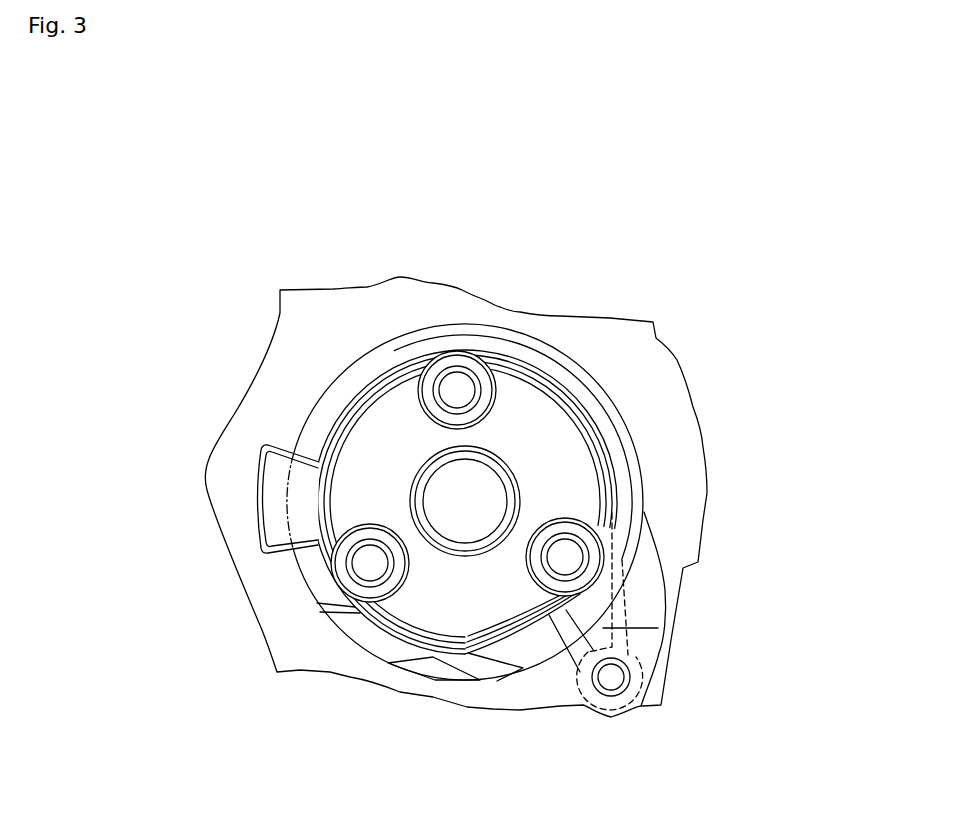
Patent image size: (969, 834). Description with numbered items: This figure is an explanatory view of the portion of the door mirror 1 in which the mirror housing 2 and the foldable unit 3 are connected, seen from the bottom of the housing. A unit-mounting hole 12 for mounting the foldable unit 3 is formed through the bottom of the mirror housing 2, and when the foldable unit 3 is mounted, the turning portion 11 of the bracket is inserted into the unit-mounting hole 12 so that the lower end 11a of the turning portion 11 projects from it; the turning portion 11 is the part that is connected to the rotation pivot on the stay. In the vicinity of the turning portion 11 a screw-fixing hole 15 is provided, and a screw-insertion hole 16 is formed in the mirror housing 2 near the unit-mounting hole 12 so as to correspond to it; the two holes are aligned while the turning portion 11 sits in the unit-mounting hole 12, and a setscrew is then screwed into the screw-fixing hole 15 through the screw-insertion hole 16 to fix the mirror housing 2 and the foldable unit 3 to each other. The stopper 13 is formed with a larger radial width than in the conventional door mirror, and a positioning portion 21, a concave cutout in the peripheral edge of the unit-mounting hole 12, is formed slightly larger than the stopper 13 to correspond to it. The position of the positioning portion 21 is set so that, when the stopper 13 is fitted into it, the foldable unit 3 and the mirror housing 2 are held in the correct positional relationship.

The door mirror 1 is at (237, 351).
The mirror housing 2 is at (678, 395).
The foldable unit 3 is at (450, 338).
The turning portion 11 is at (566, 384).
The lower end of the turning portion 11a is at (574, 465).
The unit-mounting hole 12 is at (541, 337).
The stopper 13 is at (273, 530).
The screw-fixing hole 15 is at (612, 684).
The screw-insertion hole 16 is at (589, 689).
The positioning portion 21 is at (248, 482).